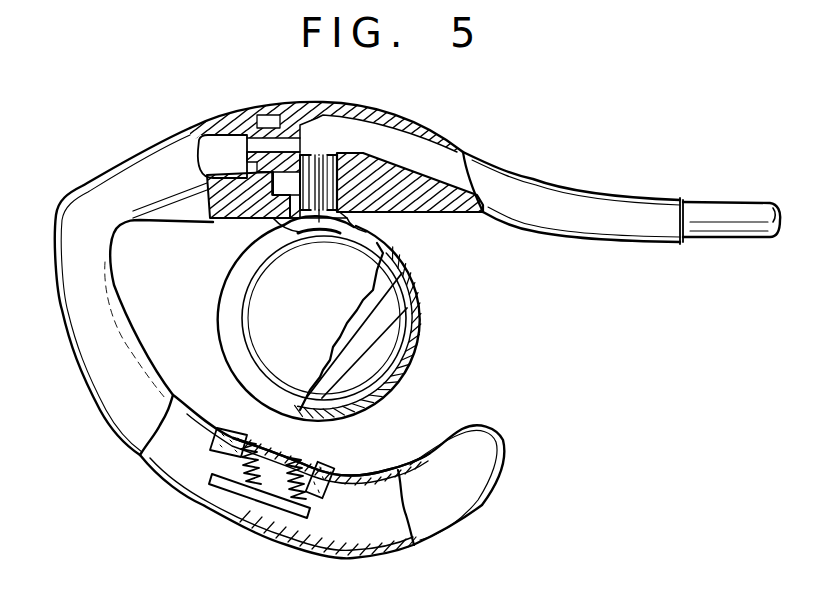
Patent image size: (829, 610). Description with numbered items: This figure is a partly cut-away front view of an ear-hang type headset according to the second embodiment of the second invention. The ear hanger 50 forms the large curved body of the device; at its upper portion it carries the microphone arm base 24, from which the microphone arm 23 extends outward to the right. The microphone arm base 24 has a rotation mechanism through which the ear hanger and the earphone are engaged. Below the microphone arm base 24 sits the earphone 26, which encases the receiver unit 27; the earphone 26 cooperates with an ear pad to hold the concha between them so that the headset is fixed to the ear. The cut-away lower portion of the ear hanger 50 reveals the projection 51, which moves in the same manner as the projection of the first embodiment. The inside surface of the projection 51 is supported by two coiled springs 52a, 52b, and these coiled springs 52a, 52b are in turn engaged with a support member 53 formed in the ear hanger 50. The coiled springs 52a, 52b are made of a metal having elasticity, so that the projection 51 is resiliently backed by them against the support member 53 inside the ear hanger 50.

The ear hanger 50 is at (80, 204).
The microphone arm base 24 is at (572, 190).
The microphone arm 23 is at (723, 208).
The earphone 26 is at (254, 300).
The receiver unit 27 is at (402, 315).
The projection 51 is at (317, 462).
The coiled spring 52a is at (297, 496).
The coiled spring 52b is at (237, 470).
The support member 53 is at (262, 498).